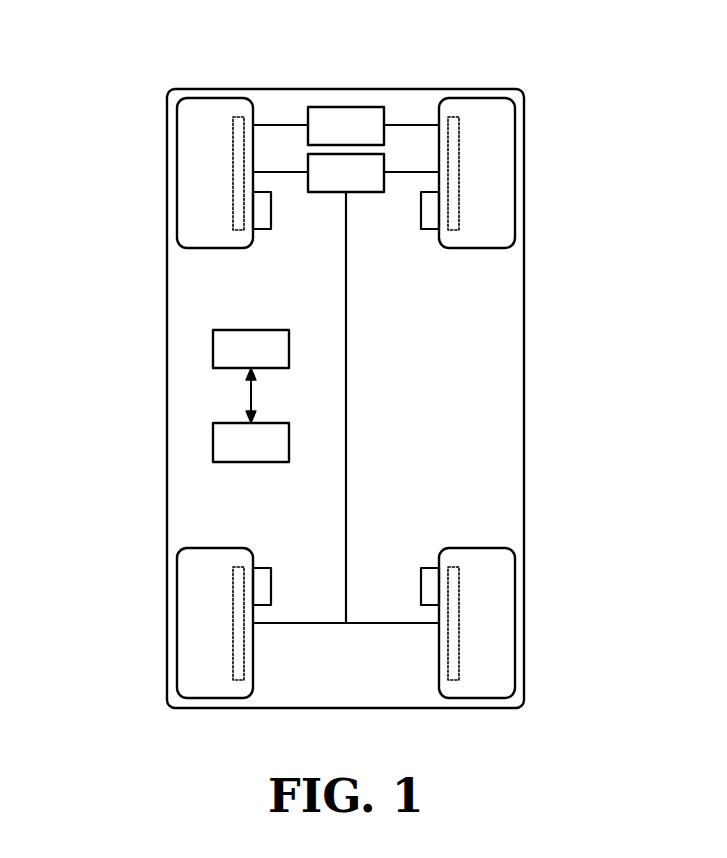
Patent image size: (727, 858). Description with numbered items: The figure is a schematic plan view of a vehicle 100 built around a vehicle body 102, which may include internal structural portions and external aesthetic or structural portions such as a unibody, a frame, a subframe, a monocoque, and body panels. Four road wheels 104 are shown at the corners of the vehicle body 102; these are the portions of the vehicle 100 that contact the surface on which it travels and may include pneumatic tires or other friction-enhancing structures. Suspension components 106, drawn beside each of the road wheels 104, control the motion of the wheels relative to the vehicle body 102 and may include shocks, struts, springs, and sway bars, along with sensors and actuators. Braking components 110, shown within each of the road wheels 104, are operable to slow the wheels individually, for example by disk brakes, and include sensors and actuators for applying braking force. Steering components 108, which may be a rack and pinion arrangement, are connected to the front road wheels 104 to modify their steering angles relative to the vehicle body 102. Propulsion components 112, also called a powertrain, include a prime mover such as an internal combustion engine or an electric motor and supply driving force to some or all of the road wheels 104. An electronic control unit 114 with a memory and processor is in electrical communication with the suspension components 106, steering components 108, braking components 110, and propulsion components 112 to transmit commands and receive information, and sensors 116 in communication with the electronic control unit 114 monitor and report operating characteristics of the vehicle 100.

The vehicle 100 is at (134, 57).
The vehicle body 102 is at (495, 89).
The road wheels 104 is at (177, 119).
The suspension components 106 is at (262, 229).
The steering components 108 is at (346, 126).
The braking components 110 is at (233, 193).
The propulsion components 112 is at (346, 173).
The electronic control unit 114 is at (251, 349).
The sensors 116 is at (251, 442).